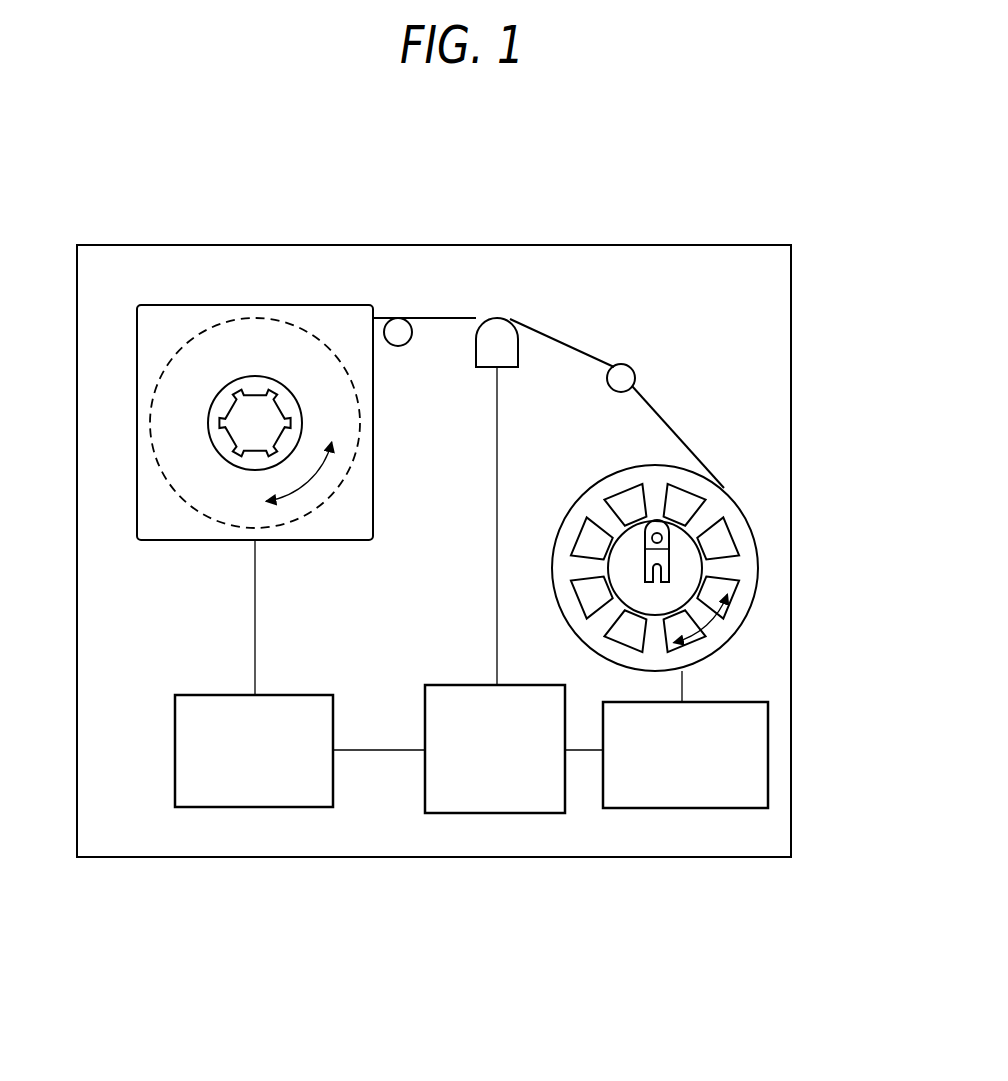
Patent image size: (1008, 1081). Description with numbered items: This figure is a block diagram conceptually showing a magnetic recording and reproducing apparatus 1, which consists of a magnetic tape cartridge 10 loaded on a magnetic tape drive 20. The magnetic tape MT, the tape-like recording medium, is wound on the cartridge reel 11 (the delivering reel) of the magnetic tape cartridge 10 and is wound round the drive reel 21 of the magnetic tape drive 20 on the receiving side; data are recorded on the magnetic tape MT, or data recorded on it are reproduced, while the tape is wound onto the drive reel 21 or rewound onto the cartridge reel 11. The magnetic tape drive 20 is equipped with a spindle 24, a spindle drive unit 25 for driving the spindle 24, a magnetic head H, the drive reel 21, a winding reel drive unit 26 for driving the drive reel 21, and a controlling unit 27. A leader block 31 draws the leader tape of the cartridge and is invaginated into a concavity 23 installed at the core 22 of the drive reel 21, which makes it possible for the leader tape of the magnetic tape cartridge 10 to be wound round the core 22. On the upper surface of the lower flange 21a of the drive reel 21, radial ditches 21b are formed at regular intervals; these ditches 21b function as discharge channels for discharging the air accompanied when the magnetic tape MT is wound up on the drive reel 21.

The magnetic recording and reproducing apparatus 1 is at (602, 186).
The magnetic tape cartridge 10 is at (262, 305).
The cartridge reel 11 is at (258, 383).
The magnetic tape drive 20 is at (650, 245).
The drive reel 21 is at (730, 647).
The lower flange 21a is at (633, 466).
The radial ditch 21b is at (622, 502).
The core 22 is at (630, 583).
The concavity 23 is at (672, 550).
The spindle 24 is at (252, 412).
The spindle drive unit 25 is at (252, 808).
The winding reel drive unit 26 is at (684, 808).
The controlling unit 27 is at (479, 813).
The leader block 31 is at (680, 551).
The magnetic head H is at (500, 332).
The magnetic tape MT is at (668, 413).